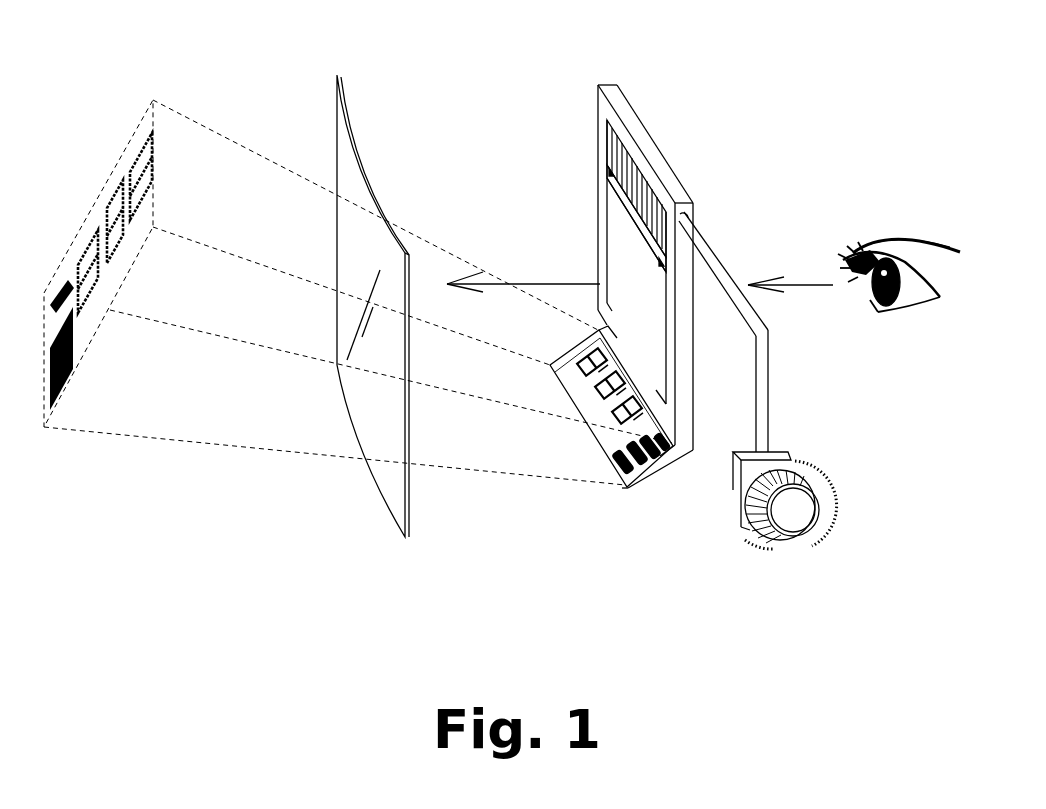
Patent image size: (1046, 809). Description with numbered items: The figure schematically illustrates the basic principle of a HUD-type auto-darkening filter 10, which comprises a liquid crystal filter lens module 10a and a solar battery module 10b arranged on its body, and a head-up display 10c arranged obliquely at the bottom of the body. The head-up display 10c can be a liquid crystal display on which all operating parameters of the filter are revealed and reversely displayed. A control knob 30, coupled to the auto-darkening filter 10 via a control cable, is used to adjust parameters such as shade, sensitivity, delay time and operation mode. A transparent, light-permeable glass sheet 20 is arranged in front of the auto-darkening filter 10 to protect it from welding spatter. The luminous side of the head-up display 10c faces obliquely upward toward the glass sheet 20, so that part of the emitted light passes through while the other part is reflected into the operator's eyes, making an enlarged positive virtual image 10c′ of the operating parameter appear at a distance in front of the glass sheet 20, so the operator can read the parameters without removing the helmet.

The auto-darkening filter 10 is at (645, 286).
The liquid crystal filter lens module 10a is at (617, 237).
The solar battery module 10b is at (608, 128).
The head-up display 10c is at (615, 440).
The virtual image of display unit 10c′ is at (358, 292).
The glass sheet 20 is at (373, 287).
The control knob 30 is at (758, 399).